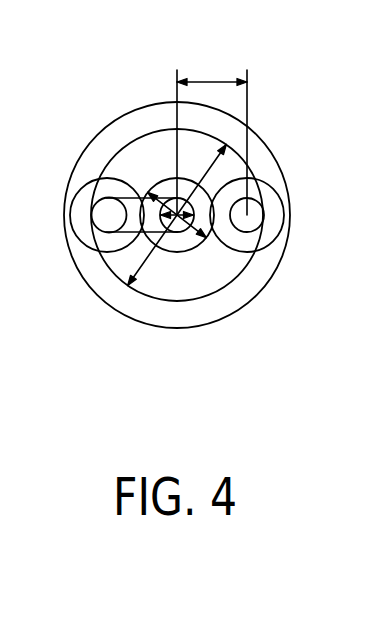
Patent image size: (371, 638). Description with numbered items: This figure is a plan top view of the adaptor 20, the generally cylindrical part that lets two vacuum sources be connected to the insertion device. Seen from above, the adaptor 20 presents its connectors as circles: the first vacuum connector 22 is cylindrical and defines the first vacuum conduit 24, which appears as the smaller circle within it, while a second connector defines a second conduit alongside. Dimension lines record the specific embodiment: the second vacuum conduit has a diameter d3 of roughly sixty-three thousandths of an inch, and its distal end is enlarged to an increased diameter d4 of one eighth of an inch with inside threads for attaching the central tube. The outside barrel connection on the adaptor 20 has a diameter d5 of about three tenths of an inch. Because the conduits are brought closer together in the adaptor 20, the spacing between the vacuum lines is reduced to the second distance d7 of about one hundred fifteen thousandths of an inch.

The adaptor 20 is at (150, 105).
The first vacuum connector 22 is at (285, 227).
The first vacuum conduit 24 is at (247, 215).
The diameter of the second vacuum conduit d3 is at (206, 238).
The increased diameter of the distal end of the second vacuum conduit d4 is at (177, 215).
The diameter of the outside barrel connection d5 is at (227, 144).
The second distance between the vacuum lines d7 is at (212, 81).